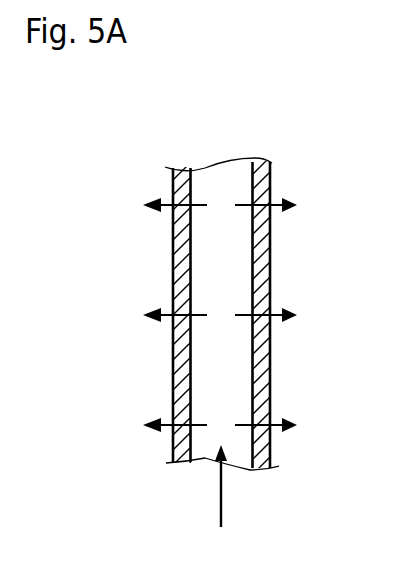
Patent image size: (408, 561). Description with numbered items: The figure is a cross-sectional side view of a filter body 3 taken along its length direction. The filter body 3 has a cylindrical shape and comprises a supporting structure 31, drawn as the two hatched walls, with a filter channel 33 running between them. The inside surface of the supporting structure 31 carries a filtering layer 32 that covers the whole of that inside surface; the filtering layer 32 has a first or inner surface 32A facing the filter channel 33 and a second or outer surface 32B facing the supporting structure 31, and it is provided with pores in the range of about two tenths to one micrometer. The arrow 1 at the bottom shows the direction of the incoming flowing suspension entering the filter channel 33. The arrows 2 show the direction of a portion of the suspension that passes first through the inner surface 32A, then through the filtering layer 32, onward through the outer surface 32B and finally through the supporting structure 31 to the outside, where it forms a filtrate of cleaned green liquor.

The arrow showing direction of incoming flowing suspension 1 is at (217, 486).
The arrow showing direction of suspension passing through filtering layer 2 is at (225, 316).
The filter body 3 is at (270, 180).
The supporting structure 31 is at (265, 230).
The filtering layer 32 is at (256, 468).
The first/inner surface of the filtering layer 32A is at (245, 357).
The second/outer surface of the filtering layer 32B is at (254, 268).
The filter channel 33 is at (219, 173).